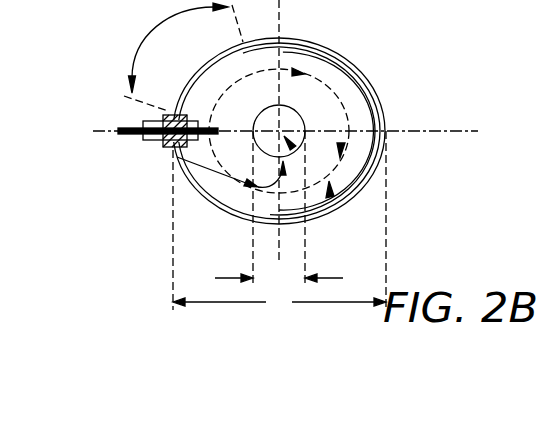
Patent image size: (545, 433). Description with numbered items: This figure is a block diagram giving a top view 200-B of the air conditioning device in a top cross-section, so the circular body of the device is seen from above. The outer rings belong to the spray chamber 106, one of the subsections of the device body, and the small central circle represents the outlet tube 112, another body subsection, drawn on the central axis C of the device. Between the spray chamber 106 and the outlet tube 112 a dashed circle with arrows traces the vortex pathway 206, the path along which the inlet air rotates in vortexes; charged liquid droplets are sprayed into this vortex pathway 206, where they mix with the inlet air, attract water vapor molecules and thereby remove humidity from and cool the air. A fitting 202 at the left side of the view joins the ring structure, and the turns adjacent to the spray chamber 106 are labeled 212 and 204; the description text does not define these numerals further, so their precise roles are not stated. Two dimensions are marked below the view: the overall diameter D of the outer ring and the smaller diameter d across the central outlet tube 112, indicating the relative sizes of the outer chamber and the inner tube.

The top view 200-B is at (416, 37).
The spray chamber 106 is at (382, 108).
The coil turn 212 is at (355, 77).
The inner coil turn / outlet 204 is at (352, 183).
The vortex pathway 206 is at (201, 102).
The inlet connector 202 is at (177, 156).
The outlet tube 112 is at (303, 122).
The center axis C is at (293, 148).
The outer diameter D is at (279, 303).
The inner diameter d is at (333, 278).